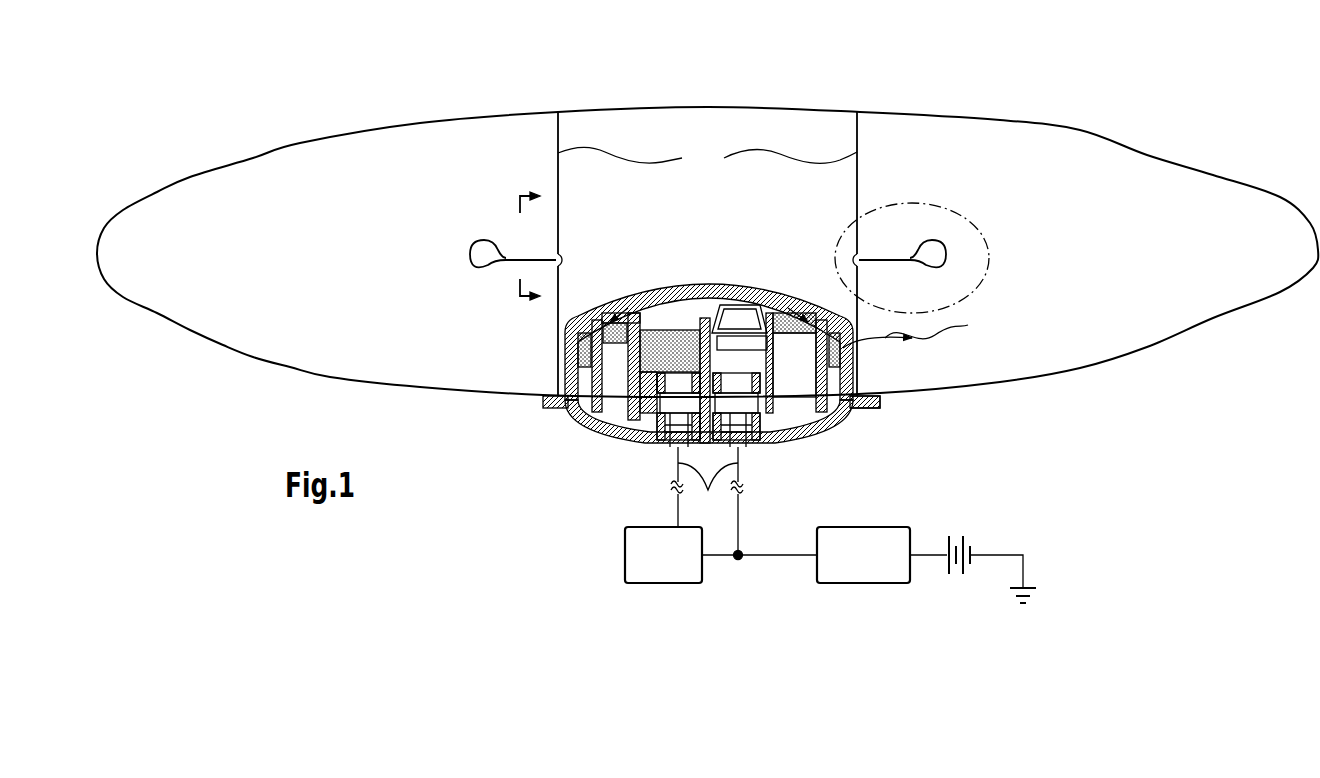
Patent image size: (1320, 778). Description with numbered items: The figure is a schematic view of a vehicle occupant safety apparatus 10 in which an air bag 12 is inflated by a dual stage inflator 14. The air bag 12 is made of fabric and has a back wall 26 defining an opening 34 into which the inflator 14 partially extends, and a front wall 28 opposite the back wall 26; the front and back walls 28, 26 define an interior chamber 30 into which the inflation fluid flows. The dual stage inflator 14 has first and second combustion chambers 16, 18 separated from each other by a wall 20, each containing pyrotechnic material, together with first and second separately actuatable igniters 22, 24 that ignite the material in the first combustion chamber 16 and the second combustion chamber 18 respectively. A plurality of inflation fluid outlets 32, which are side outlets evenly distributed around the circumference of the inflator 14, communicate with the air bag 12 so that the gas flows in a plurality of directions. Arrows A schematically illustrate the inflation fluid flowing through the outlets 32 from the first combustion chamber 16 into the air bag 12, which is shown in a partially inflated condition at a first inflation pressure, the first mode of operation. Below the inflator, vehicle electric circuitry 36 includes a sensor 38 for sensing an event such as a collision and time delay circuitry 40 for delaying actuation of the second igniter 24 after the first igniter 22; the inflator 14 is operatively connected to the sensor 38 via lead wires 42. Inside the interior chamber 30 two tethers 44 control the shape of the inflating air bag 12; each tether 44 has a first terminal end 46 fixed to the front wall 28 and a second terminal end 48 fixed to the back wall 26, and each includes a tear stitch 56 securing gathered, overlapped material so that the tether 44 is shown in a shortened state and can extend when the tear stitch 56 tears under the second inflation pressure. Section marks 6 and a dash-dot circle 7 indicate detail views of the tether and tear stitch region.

The vehicle occupant safety apparatus 10 is at (1124, 484).
The air bag 12 is at (707, 254).
The dual stage inflator 14 is at (713, 357).
The first combustion chamber 16 is at (796, 386).
The second combustion chamber 18 is at (657, 346).
The wall 20 is at (705, 324).
The first igniter 22 is at (741, 399).
The second igniter 24 is at (682, 401).
The back wall 26 is at (253, 357).
The front wall 28 is at (299, 143).
The interior chamber 30 is at (1078, 224).
The inflation fluid outlets 32 is at (572, 342).
The opening 34 is at (880, 404).
The vehicle electric circuitry 36 is at (843, 602).
The sensor 38 is at (862, 583).
The time delay circuitry 40 is at (655, 583).
The lead wires 42 is at (707, 501).
The tether 44 is at (707, 159).
The first terminal end 46 is at (550, 118).
The second terminal end 48 is at (556, 384).
The tear stitch 56 is at (531, 259).
The section line 6- 6 is at (538, 247).
The detail circle 7 is at (912, 252).
The arrows A is at (915, 326).